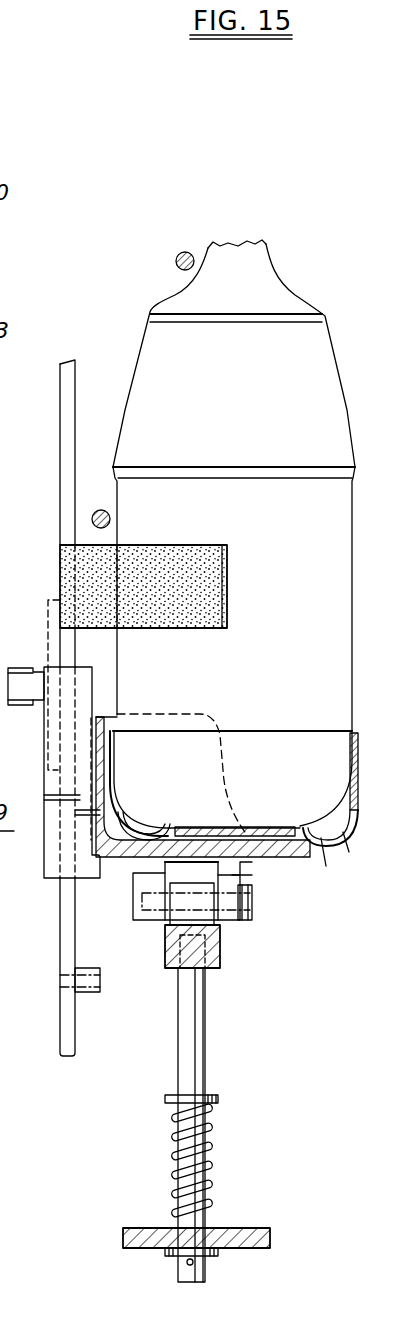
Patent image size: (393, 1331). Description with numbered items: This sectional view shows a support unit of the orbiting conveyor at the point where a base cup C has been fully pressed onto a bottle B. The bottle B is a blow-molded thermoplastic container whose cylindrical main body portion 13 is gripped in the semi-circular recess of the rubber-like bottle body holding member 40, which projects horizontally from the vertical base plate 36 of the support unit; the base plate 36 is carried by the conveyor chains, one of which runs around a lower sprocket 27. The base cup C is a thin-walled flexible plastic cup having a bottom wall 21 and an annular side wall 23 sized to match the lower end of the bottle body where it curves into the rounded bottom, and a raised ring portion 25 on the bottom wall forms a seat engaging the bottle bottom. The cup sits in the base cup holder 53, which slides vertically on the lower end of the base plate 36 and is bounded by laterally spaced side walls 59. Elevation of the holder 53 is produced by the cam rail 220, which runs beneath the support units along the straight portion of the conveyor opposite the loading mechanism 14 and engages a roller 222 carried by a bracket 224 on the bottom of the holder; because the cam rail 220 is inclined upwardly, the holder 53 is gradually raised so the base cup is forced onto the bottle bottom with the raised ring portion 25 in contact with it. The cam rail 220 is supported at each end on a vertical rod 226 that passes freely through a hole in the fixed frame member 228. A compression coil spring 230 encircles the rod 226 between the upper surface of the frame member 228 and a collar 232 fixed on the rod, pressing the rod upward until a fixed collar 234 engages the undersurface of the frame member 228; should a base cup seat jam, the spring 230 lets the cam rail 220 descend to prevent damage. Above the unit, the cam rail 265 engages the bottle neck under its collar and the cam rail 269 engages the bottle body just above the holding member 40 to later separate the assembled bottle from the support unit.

The cylindrical main body portion 13 is at (350, 558).
The cam rail 265 is at (176, 265).
The bottle B is at (322, 311).
The base plate 36 is at (60, 404).
The cam rail 269 is at (109, 514).
The bottle body holding member 40 is at (200, 553).
The lower sprocket 27 is at (8, 676).
The base cup holder 53 is at (44, 759).
The bottom wall 21 is at (219, 815).
The annular side wall 23 is at (350, 770).
The raised ring portion 25 is at (292, 826).
The base cup C is at (176, 905).
The loading mechanism 14 is at (5, 831).
The roller 222 is at (187, 882).
The bracket 224 is at (268, 891).
The cam rail 220 is at (221, 950).
The side wall 59 is at (117, 966).
The vertical rod 226 is at (192, 1022).
The collar 232 is at (215, 1098).
The compression coil spring 230 is at (206, 1150).
The fixed frame member 228 is at (255, 1230).
The fixed collar 234 is at (165, 1252).